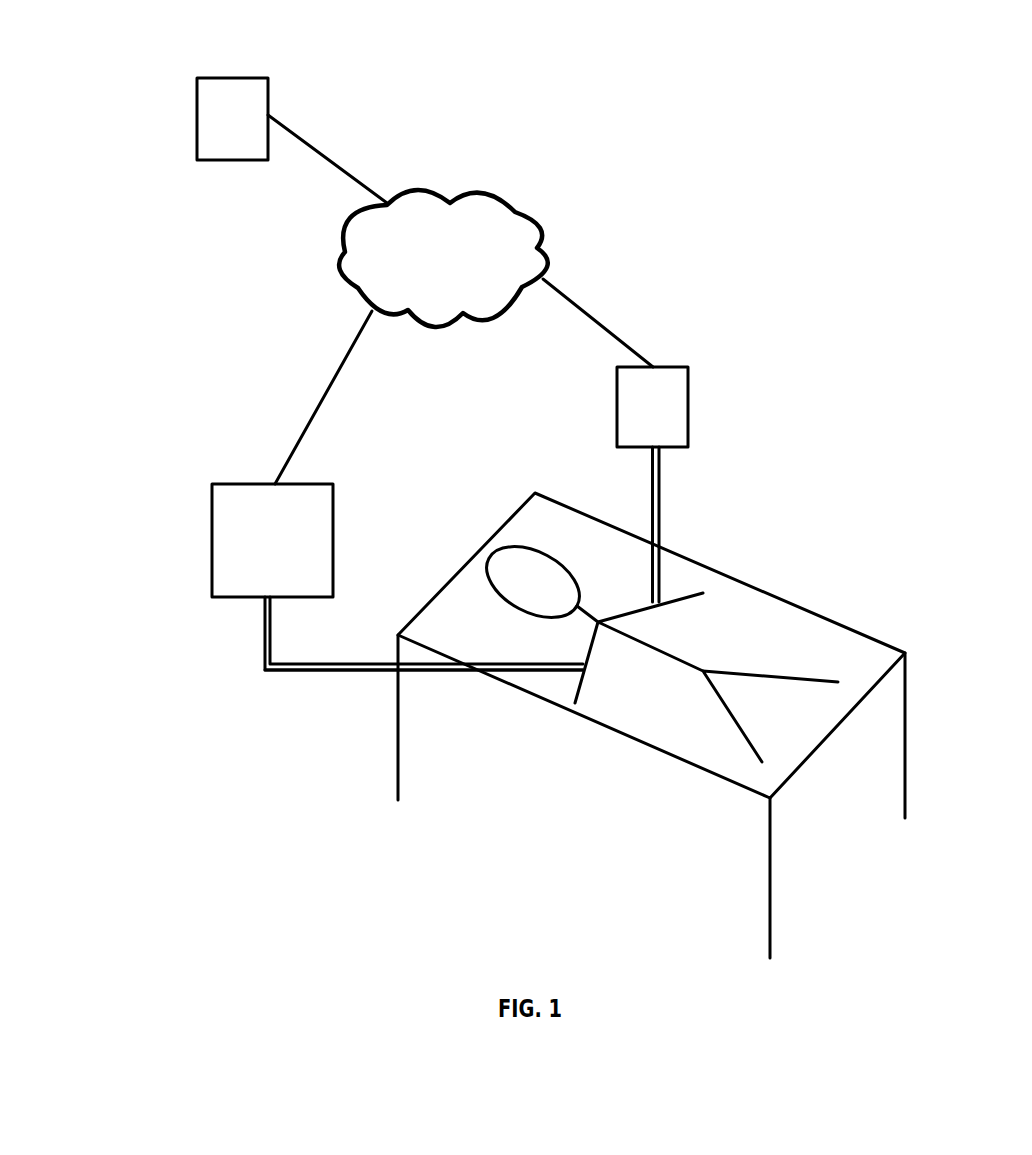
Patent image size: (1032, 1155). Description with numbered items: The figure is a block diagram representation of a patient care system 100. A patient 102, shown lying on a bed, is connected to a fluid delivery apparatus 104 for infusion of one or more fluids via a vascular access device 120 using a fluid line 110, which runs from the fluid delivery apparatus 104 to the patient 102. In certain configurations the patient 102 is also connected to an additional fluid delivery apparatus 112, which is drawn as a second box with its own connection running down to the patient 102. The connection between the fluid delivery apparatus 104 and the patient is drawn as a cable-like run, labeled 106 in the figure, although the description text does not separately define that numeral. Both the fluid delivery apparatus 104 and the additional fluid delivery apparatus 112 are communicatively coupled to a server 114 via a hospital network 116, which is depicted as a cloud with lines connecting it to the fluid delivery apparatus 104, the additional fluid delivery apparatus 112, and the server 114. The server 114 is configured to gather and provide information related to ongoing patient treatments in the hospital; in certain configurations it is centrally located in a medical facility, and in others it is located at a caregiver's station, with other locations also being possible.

The patient care system 100 is at (183, 226).
The patient 102 is at (737, 727).
The fluid delivery apparatus 104 is at (229, 548).
The cable 106 is at (312, 484).
The fluid line 110 is at (265, 645).
The additional fluid delivery apparatus 112 is at (683, 392).
The server 114 is at (268, 88).
The hospital network 116 is at (516, 212).
The vascular access device 120 is at (580, 678).